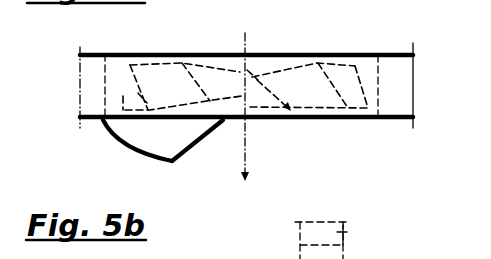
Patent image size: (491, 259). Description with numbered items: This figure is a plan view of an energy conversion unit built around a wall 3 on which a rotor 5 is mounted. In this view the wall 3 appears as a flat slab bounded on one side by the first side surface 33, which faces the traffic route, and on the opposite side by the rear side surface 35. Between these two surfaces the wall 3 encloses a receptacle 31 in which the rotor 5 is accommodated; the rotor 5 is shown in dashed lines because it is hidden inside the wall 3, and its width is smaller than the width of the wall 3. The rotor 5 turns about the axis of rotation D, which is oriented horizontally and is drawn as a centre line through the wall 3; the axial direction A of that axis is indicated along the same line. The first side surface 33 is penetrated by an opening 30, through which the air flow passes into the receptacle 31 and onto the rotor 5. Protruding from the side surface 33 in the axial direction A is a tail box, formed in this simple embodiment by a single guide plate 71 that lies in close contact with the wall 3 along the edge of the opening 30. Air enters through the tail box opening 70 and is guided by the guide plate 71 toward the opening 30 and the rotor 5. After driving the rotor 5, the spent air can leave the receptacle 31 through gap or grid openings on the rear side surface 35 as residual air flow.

The wall 3 is at (92, 77).
The rotor 5 is at (168, 100).
The opening 30 is at (135, 170).
The receptacle 31 is at (384, 86).
The first side surface 33 is at (359, 126).
The rear side surface 35 is at (152, 52).
The tail box opening 70 is at (159, 130).
The guide plate 71 is at (141, 152).
The axial direction A is at (246, 158).
The axis of rotation D is at (246, 130).